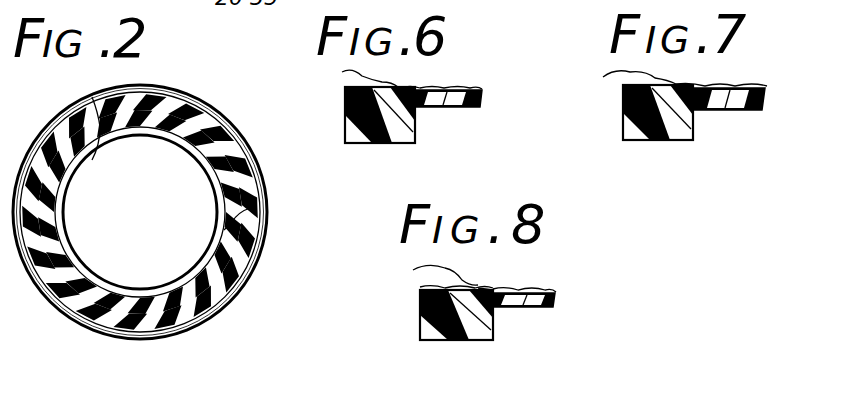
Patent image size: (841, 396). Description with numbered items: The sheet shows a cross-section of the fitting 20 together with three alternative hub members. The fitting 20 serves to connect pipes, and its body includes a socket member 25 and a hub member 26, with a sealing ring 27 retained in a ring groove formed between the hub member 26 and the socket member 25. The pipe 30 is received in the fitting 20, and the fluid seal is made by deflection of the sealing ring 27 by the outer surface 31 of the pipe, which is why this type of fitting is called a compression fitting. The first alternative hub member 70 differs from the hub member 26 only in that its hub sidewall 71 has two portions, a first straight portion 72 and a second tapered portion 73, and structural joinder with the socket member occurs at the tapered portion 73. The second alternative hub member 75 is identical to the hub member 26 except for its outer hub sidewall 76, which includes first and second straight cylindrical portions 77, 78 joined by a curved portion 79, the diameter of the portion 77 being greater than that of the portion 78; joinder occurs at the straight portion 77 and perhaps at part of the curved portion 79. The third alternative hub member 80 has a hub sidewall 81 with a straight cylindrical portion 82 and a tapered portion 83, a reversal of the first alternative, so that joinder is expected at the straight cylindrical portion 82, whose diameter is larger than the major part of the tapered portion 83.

In FIG. 2, the fitting 20 is at (253, 87).
In FIG. 2, the socket member 25 is at (246, 131).
In FIG. 2, the hub member 26 is at (150, 104).
In FIG. 2, the sealing ring 27 is at (158, 104).
In FIG. 2, the pipe 30 is at (92, 97).
In FIG. 2, the outer surface 31 is at (250, 208).
In FIG. 6, the hub member 70 is at (388, 148).
In FIG. 6, the hub sidewall 71 is at (400, 86).
In FIG. 6, the first straight portion 72 is at (438, 87).
In FIG. 6, the second tapered portion 73 is at (342, 72).
In FIG. 7, the hub member 75 is at (621, 129).
In FIG. 7, the outer hub sidewall 76 is at (770, 88).
In FIG. 7, the first straight cylindrical portion 77 is at (603, 77).
In FIG. 7, the second straight cylindrical portion 78 is at (716, 84).
In FIG. 7, the curved portion 79 is at (677, 86).
In FIG. 8, the hub member 80 is at (417, 319).
In FIG. 8, the hub sidewall 81 is at (495, 287).
In FIG. 8, the straight cylindrical portion 82 is at (413, 270).
In FIG. 8, the tapered portion 83 is at (533, 290).